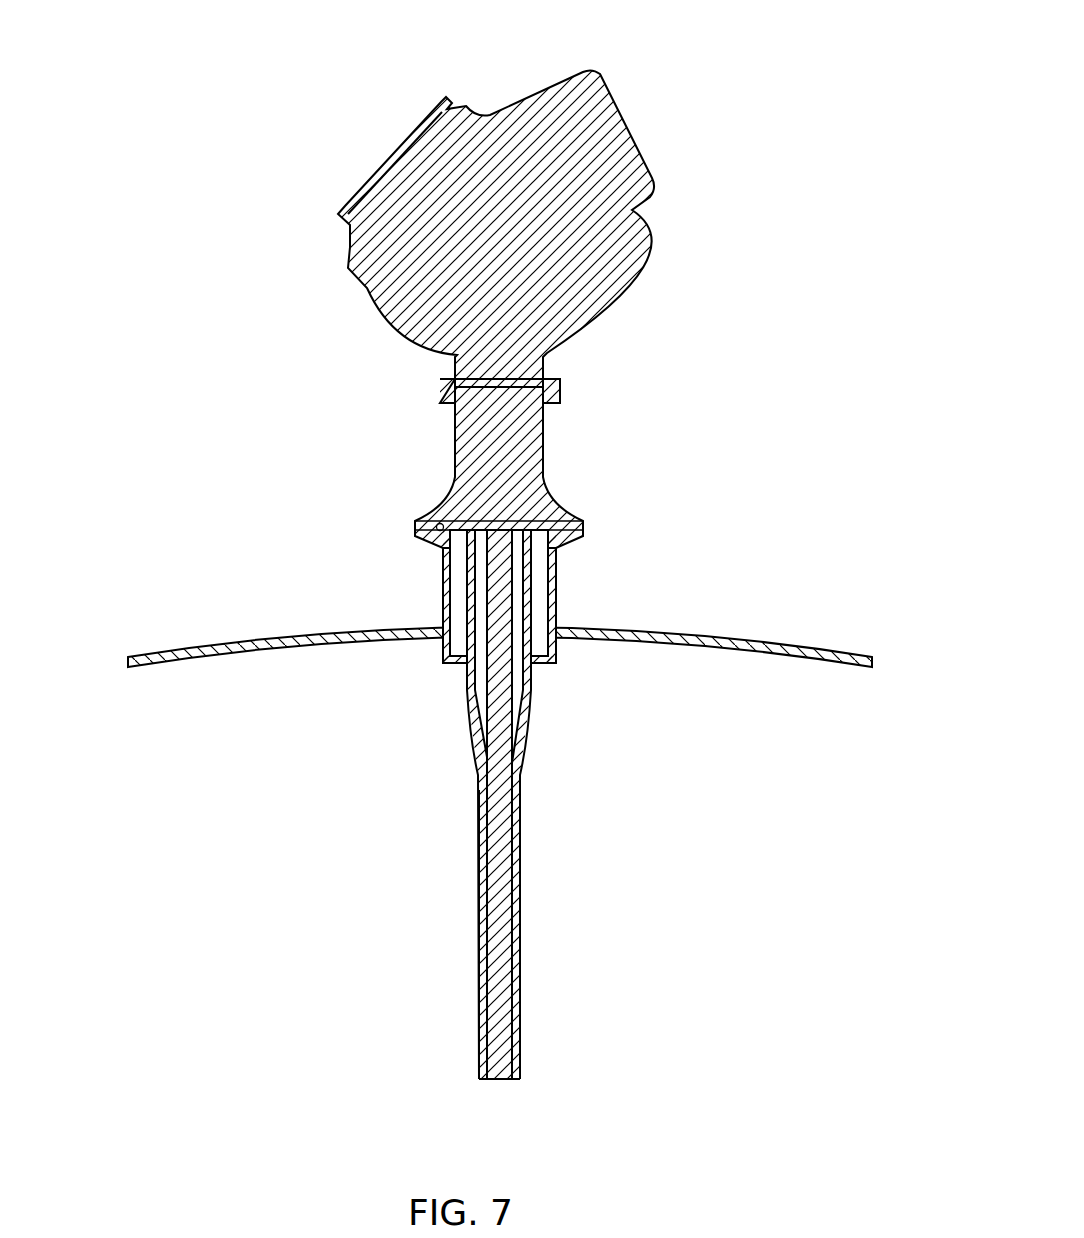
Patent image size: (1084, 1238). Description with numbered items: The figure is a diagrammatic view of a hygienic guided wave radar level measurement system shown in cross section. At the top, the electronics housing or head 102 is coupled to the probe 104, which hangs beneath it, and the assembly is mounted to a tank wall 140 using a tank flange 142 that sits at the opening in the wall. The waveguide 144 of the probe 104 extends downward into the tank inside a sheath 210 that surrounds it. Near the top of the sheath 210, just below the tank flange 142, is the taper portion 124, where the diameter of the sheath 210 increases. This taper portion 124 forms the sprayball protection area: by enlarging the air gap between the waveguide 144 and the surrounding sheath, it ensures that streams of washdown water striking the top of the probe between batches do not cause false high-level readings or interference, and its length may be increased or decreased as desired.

The head 102 is at (542, 90).
The probe 104 is at (558, 500).
The taper portion 124 is at (473, 738).
The tank wall 140 is at (718, 637).
The tank flange 142 is at (556, 597).
The waveguide 144 is at (512, 688).
The sheath 210 is at (470, 896).